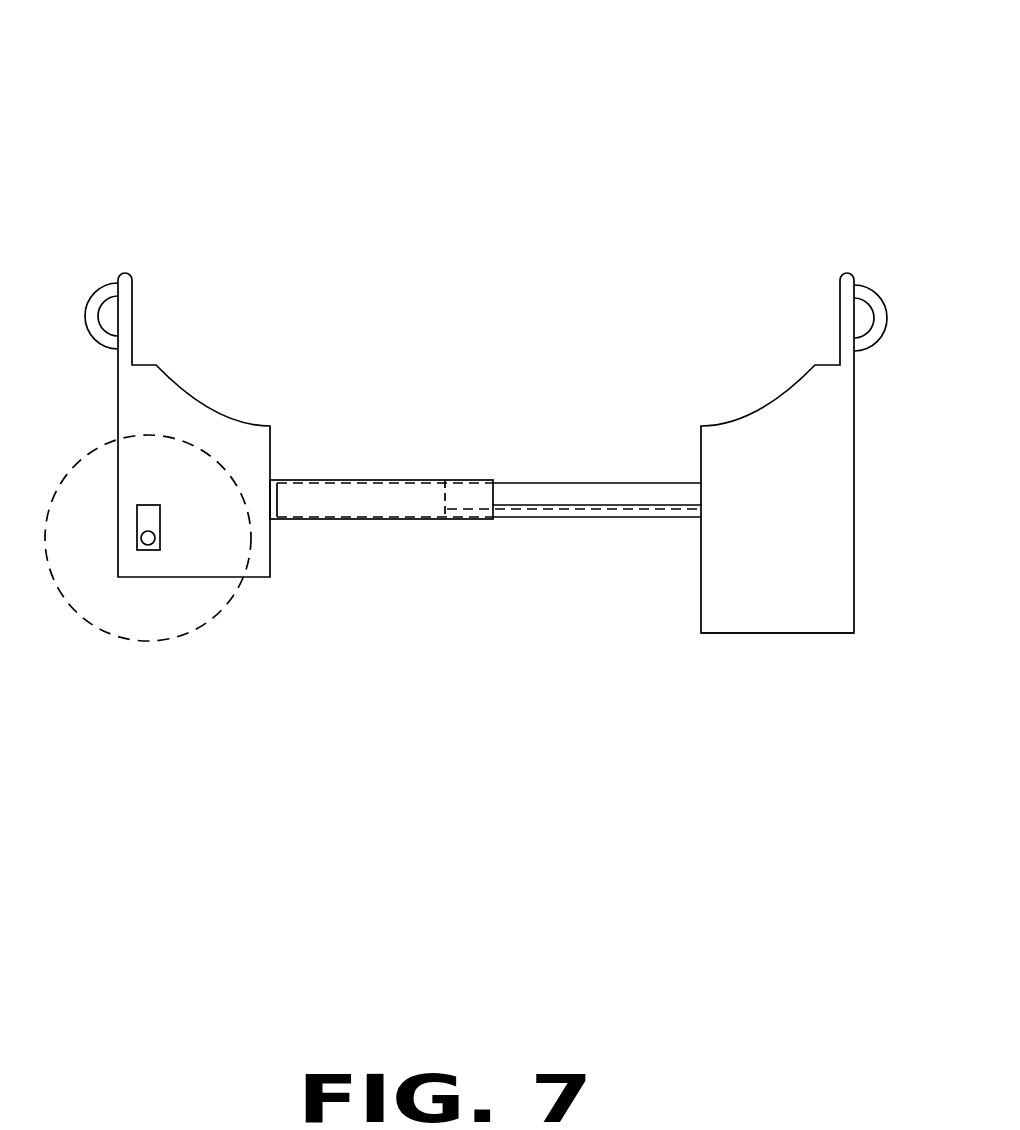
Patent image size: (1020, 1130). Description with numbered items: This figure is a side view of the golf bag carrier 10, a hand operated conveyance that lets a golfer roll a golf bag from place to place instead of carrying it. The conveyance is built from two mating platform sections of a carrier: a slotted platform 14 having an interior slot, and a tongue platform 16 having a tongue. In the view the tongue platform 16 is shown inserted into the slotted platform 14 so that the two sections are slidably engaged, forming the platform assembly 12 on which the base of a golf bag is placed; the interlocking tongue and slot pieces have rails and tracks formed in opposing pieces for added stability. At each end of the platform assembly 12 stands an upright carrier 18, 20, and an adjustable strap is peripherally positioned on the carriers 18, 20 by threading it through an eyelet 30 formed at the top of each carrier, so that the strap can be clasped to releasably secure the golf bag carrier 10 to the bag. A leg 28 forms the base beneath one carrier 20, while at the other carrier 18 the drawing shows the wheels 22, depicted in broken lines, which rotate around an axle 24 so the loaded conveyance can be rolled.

The golf bag carrier 10 is at (716, 107).
The platform assembly 12 is at (560, 490).
The slotted platform 14 is at (403, 518).
The tongue platform 16 is at (577, 517).
The carrier 18 is at (210, 413).
The carrier 20 is at (725, 530).
The wheel 22 is at (100, 625).
The axle 24 is at (150, 548).
The leg 28 is at (798, 633).
The eyelet 30 is at (88, 298).